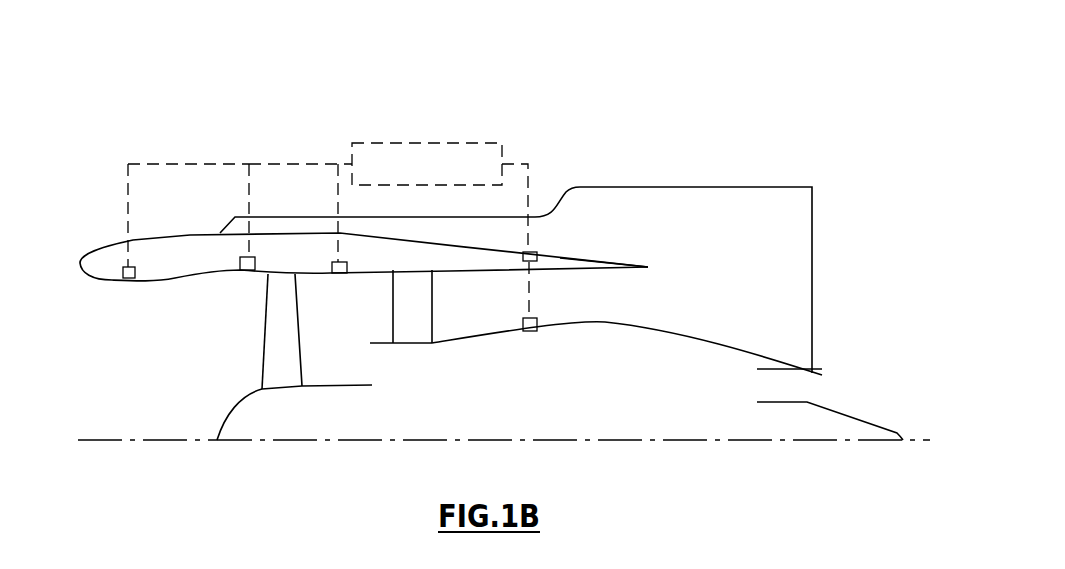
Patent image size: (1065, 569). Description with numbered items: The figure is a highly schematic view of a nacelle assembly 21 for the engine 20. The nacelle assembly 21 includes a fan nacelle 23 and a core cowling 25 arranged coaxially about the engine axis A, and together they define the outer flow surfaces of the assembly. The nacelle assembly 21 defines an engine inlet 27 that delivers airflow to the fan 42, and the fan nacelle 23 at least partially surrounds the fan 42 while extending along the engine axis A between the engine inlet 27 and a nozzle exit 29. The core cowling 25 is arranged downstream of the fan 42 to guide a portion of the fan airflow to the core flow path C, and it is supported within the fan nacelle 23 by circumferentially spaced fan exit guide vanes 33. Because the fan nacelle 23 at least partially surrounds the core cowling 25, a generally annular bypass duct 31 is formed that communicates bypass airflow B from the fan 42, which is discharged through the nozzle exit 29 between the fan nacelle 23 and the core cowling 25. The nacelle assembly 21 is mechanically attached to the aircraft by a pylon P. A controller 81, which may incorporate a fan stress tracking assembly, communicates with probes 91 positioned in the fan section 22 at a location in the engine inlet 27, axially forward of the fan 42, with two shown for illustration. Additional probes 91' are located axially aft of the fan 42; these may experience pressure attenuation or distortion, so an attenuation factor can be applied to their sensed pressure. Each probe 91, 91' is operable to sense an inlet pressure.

The engine 20 is at (140, 80).
The nacelle assembly 21 is at (115, 168).
The fan section 22 is at (264, 157).
The fan nacelle 23 is at (341, 231).
The engine inlet 27 is at (100, 244).
The core cowling 25 is at (770, 355).
The nozzle exit 29 is at (612, 252).
The bypass duct 31 is at (482, 315).
The fan exit guide vanes 33 is at (425, 318).
The fan 42 is at (294, 355).
The controller 81 is at (468, 143).
The probe 91 is at (189, 291).
The probe 91' is at (467, 273).
The pylon P is at (703, 187).
The engine axis A is at (101, 440).
The bypass airflow B is at (372, 305).
The core flow path C is at (372, 362).